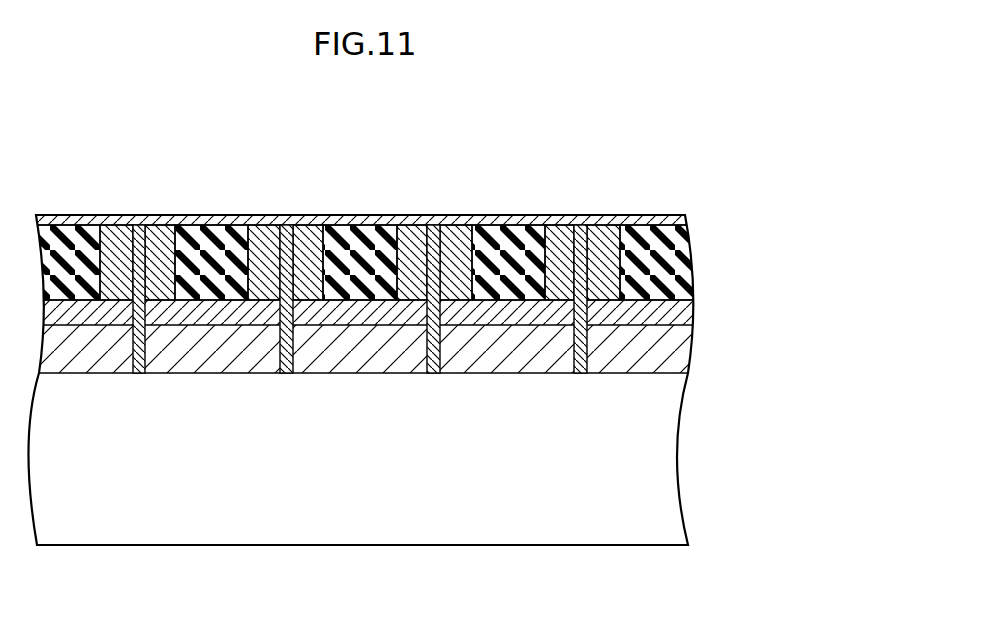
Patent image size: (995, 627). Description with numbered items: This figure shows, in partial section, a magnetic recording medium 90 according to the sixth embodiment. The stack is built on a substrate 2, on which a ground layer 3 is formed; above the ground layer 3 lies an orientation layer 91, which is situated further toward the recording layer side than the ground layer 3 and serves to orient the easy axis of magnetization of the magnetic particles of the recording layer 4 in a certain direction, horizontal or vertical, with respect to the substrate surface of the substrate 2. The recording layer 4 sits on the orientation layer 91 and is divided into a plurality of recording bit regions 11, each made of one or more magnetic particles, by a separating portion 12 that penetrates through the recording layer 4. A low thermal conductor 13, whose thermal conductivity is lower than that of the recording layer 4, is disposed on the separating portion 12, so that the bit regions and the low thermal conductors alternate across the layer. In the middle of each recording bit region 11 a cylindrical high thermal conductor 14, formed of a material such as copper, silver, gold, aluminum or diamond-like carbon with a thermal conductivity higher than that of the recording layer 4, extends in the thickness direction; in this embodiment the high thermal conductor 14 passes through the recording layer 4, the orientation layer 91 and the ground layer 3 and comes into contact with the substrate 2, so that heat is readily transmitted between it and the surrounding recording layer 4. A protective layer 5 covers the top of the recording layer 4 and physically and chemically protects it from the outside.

The magnetic recording medium 90 is at (454, 340).
The protective layer 5 is at (662, 214).
The low thermal conductor 13 is at (680, 257).
The separating portion 12 is at (429, 262).
The recording bit region 11 is at (311, 235).
The recording layer 4 is at (393, 223).
The high thermal conductor 14 is at (283, 235).
The orientation layer 91 is at (690, 303).
The ground layer 3 is at (682, 347).
The substrate 2 is at (667, 457).